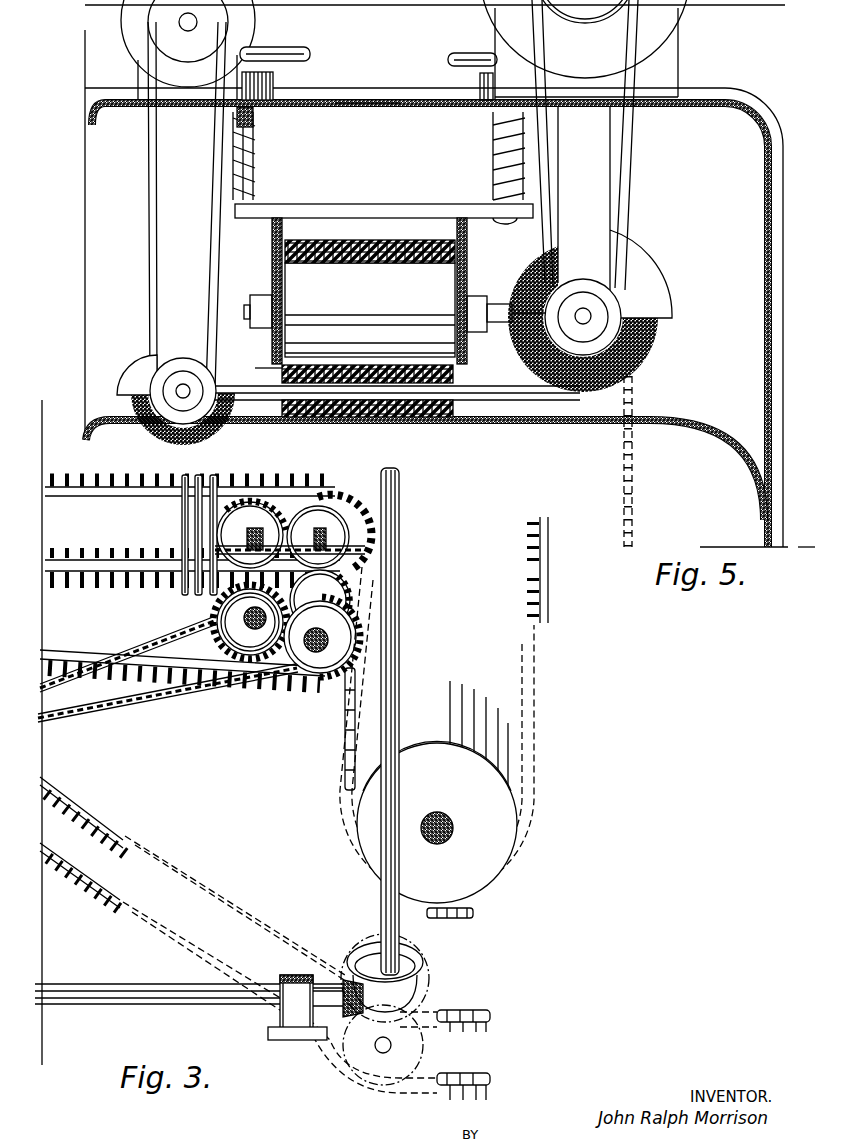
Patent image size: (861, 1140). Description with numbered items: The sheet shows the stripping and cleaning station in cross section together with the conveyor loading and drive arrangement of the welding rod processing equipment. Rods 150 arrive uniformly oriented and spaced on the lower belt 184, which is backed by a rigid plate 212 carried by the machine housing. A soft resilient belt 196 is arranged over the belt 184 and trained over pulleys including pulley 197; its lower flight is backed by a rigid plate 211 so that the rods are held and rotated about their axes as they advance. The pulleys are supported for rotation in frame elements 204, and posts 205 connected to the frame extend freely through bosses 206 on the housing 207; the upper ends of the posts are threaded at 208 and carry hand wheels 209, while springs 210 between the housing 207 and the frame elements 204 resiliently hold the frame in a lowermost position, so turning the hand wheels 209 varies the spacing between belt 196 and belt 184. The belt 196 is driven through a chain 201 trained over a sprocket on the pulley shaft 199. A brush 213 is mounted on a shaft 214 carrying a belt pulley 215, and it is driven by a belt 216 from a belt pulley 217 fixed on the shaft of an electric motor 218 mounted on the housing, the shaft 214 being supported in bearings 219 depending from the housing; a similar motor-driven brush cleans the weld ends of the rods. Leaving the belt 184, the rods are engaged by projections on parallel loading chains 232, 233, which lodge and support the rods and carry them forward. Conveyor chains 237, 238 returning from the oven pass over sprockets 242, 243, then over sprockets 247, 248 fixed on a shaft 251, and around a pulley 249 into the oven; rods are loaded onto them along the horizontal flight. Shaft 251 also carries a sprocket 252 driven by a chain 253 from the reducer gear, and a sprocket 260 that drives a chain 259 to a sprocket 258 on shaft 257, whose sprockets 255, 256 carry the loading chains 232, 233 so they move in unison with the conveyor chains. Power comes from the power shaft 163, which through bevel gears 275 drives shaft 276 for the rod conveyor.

In FIG. 3, the welding rods 150 is at (234, 471).
In FIG. 3, the power shaft 163 is at (120, 1005).
In FIG. 5, the belt 184 is at (462, 426).
In FIG. 5, the belt 196 is at (331, 246).
In FIG. 5, the pulley 197 is at (285, 275).
In FIG. 5, the shaft 199 is at (491, 302).
In FIG. 5, the chain 201 is at (632, 450).
In FIG. 5, the frame elements 204 is at (345, 203).
In FIG. 5, the posts 205 is at (258, 165).
In FIG. 5, the bosses 206 is at (273, 84).
In FIG. 5, the housing 207 is at (334, 110).
In FIG. 5, the threaded upper ends 208 is at (258, 118).
In FIG. 5, the hand wheels 209 is at (310, 55).
In FIG. 5, the springs 210 is at (258, 180).
In FIG. 5, the rigid plate 211 is at (255, 368).
In FIG. 5, the rigid plate 212 is at (375, 426).
In FIG. 5, the brush 213 is at (140, 438).
In FIG. 5, the shaft 214 is at (588, 308).
In FIG. 5, the belt pulley 215 is at (609, 314).
In FIG. 5, the belt 216 is at (620, 268).
In FIG. 5, the belt pulley 217 is at (600, 25).
In FIG. 5, the electric motor 218 is at (676, 30).
In FIG. 5, the bearings 219 is at (626, 212).
In FIG. 3, the loading chain 232 is at (48, 584).
In FIG. 3, the loading chain 233 is at (72, 486).
In FIG. 3, the conveyor chain 237 is at (100, 562).
In FIG. 3, the conveyor chain 238 is at (108, 500).
In FIG. 3, the sprocket 242 is at (420, 1050).
In FIG. 3, the sprocket 243 is at (422, 991).
In FIG. 3, the sprocket 247 is at (320, 601).
In FIG. 3, the sprocket 248 is at (322, 498).
In FIG. 3, the pulley 249 is at (427, 692).
In FIG. 3, the shaft 251 is at (320, 638).
In FIG. 3, the sprocket 252 is at (322, 680).
In FIG. 3, the chain 253 is at (188, 722).
In FIG. 3, the sprocket 255 is at (218, 606).
In FIG. 3, the sprocket 256 is at (262, 504).
In FIG. 3, the shaft 257 is at (250, 622).
In FIG. 3, the sprocket 258 is at (255, 540).
In FIG. 3, the chain 259 is at (250, 534).
In FIG. 3, the sprocket 260 is at (318, 537).
In FIG. 3, the bevel gears 275 is at (345, 978).
In FIG. 3, the shaft 276 is at (400, 568).